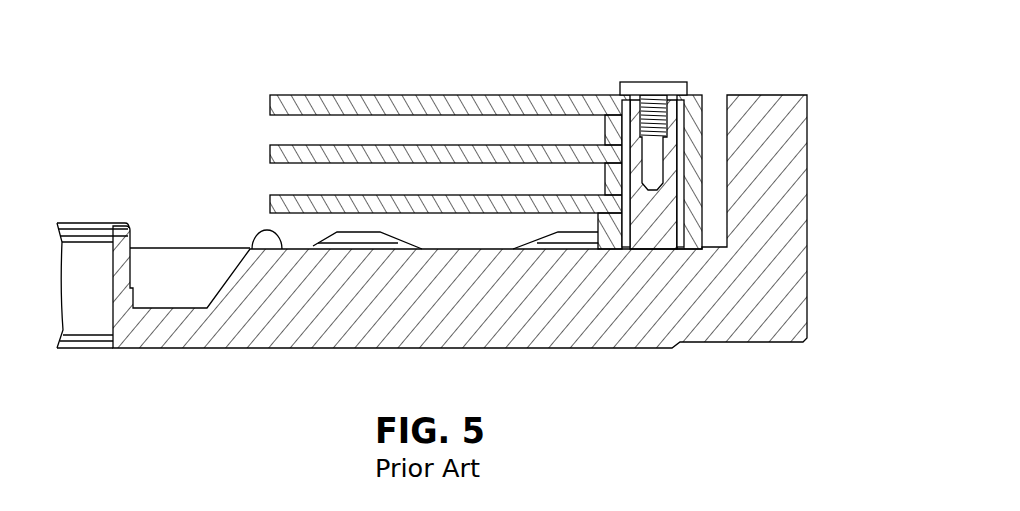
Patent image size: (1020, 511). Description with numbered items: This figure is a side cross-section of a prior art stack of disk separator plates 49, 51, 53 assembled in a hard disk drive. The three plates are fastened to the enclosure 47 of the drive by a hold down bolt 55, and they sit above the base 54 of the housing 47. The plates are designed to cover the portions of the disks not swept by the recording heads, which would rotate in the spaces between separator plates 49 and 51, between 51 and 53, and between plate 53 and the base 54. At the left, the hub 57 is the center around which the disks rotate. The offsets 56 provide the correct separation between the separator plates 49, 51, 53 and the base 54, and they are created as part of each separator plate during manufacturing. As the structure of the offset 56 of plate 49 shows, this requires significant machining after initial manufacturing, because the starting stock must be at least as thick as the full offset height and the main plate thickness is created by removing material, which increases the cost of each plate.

The enclosure 47 is at (807, 248).
The disk separator plate 49 is at (524, 95).
The disk separator plate 51 is at (270, 146).
The disk separator plate 53 is at (270, 196).
The base 54 is at (252, 249).
The hold down bolt 55 is at (629, 82).
The offset 56 is at (702, 116).
The hub 57 is at (100, 223).